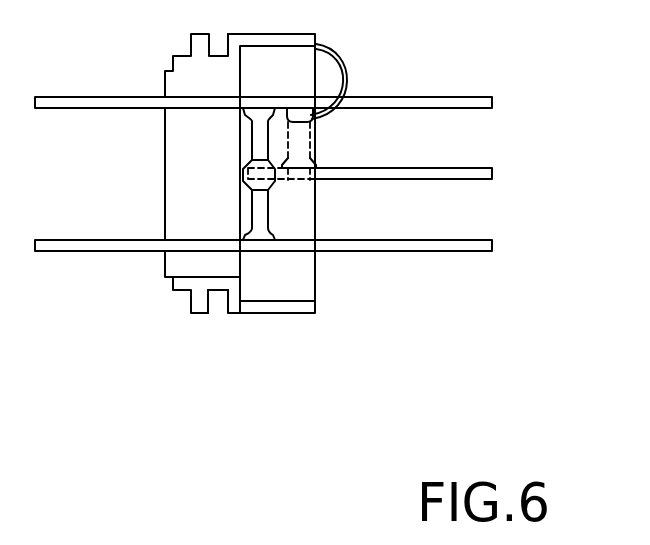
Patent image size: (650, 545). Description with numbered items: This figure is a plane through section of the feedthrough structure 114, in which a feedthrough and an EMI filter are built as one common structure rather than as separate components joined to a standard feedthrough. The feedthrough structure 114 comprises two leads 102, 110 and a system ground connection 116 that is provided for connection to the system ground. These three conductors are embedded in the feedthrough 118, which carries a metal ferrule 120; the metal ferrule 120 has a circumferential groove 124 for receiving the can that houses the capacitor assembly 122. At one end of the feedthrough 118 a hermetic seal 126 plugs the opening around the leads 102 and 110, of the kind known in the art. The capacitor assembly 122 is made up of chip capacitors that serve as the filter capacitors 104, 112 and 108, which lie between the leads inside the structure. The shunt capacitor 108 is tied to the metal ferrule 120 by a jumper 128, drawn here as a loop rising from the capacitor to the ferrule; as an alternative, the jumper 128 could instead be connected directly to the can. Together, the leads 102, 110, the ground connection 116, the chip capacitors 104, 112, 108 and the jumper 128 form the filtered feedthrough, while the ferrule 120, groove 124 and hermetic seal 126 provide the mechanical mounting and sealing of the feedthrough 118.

The lead 102 is at (388, 103).
The capacitor 104 is at (258, 142).
The shunt capacitor 108 is at (313, 150).
The lead 110 is at (470, 250).
The capacitor 112 is at (265, 218).
The feedthrough structure 114 is at (285, 345).
The system ground connection 116 is at (470, 168).
The feedthrough 118 is at (248, 310).
The metal ferrule 120 is at (300, 310).
The capacitor assembly 122 is at (314, 283).
The circumferential groove 124 is at (220, 315).
The hermetic seal 126 is at (165, 275).
The jumper 128 is at (335, 57).